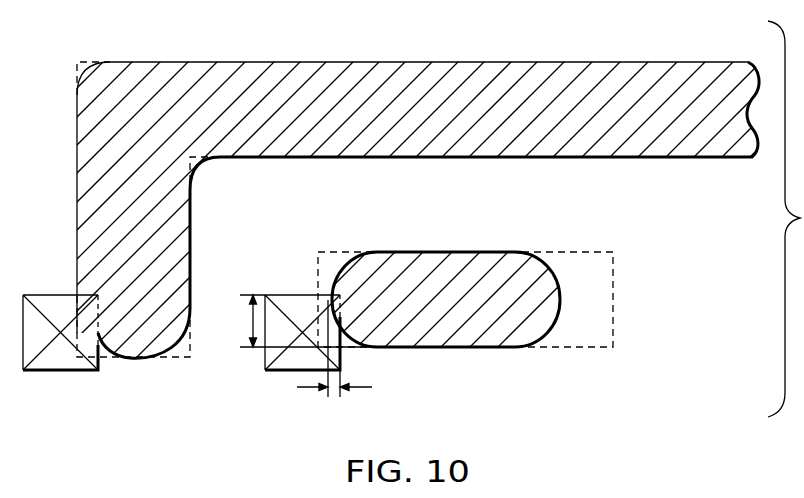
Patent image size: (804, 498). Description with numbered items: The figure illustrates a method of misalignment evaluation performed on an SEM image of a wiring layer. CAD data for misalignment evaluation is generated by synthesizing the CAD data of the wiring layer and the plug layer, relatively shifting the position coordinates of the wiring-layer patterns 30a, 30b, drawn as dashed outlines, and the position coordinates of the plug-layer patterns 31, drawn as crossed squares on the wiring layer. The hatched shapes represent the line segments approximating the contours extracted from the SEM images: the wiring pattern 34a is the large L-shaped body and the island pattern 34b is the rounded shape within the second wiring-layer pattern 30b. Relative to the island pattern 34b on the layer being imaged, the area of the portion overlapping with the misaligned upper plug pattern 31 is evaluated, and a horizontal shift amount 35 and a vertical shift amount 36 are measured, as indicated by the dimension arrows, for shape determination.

The pattern of the wiring layer 30a is at (91, 59).
The pattern of the wiring layer 30b is at (613, 293).
The pattern of the plug layer 31 is at (58, 374).
The wiring pattern 34a is at (471, 67).
The island pattern 34b is at (466, 256).
The horizontal shift amount 35 is at (334, 363).
The vertical shift amount 36 is at (300, 321).